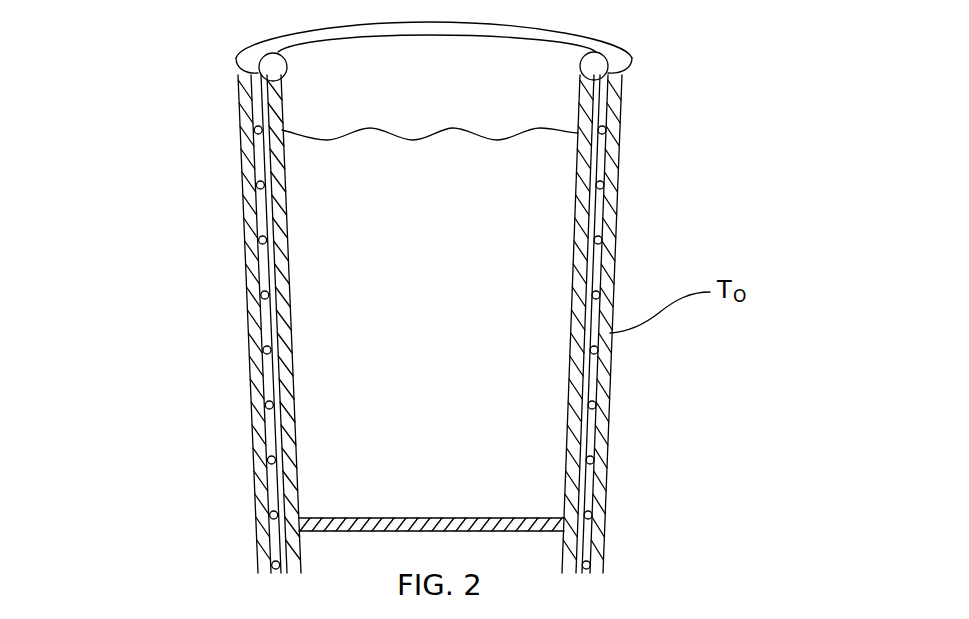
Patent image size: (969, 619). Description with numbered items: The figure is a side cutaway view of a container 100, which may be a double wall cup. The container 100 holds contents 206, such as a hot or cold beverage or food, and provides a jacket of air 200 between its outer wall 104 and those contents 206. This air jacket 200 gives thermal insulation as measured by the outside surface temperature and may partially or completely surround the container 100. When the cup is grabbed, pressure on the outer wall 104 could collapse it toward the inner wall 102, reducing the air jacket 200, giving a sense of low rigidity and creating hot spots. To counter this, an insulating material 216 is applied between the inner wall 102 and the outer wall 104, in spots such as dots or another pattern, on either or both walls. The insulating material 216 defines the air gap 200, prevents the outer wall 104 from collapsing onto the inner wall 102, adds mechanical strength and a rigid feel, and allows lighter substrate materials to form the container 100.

The container 100 is at (702, 85).
The jacket of air 200 is at (262, 432).
The inner wall 102 is at (612, 294).
The outer wall 104 is at (608, 392).
The insulating material 216 is at (243, 182).
The contents 206 is at (550, 232).